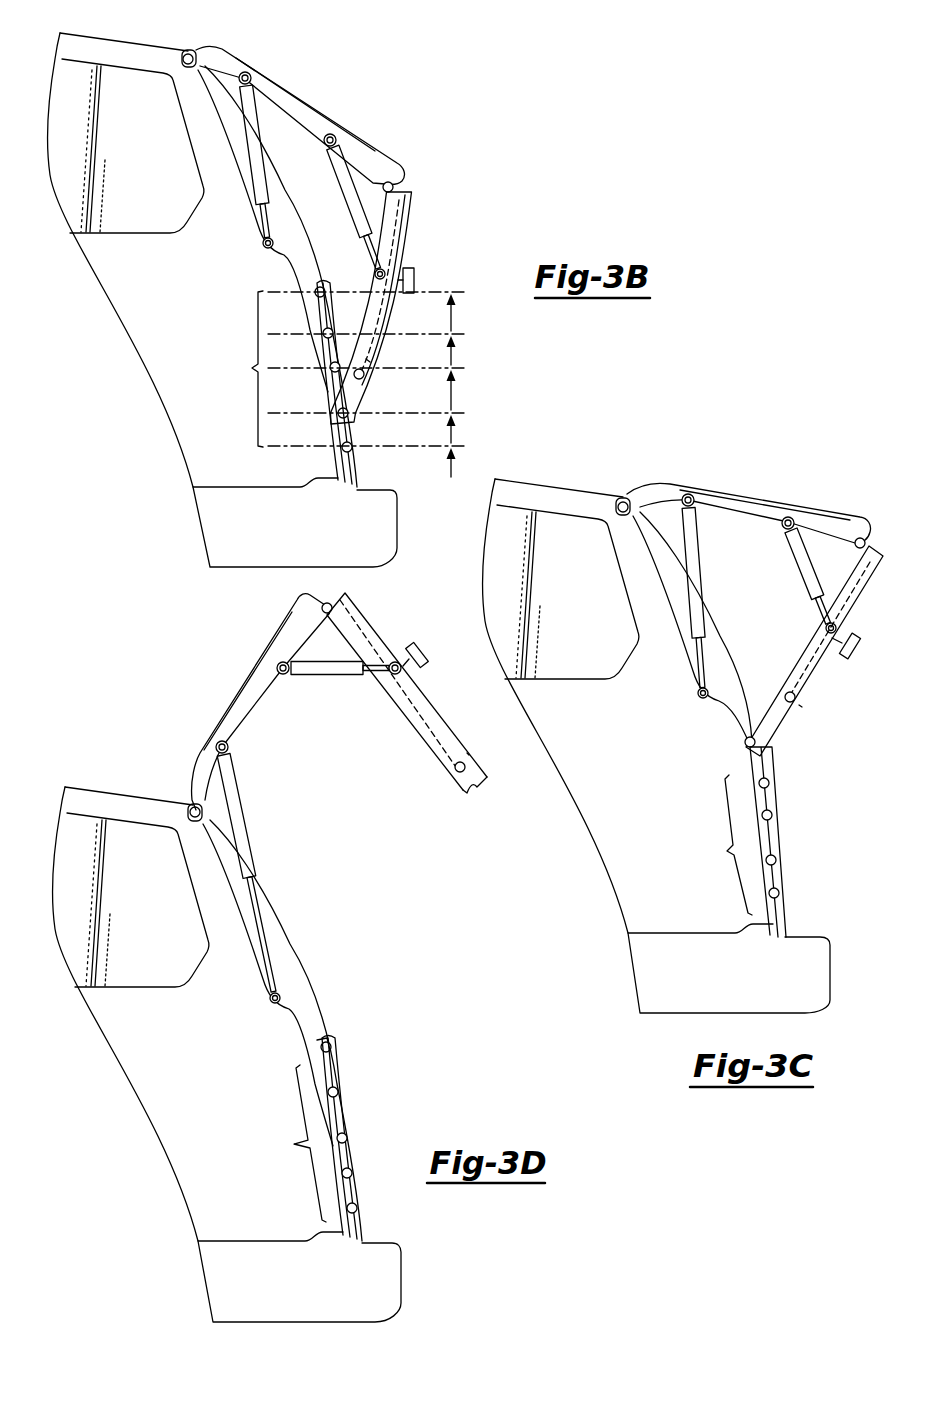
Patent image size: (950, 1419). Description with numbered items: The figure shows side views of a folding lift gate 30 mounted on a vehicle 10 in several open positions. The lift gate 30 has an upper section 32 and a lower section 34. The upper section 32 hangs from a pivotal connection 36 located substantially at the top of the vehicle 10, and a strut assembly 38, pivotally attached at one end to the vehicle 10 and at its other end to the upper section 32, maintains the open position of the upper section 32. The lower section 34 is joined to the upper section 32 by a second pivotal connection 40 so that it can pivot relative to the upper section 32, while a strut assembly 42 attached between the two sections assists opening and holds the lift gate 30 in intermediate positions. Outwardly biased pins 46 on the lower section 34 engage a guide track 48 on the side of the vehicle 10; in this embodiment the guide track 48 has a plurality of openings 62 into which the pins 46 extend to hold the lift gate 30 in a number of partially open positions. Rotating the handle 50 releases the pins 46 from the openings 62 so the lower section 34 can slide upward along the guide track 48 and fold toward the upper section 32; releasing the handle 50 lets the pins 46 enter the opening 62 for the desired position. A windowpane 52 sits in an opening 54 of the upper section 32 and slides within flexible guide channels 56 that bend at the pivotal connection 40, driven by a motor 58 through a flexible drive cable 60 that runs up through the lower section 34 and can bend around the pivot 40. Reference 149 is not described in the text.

In FIG. 3B, the vehicle 10 is at (87, 47).
In FIG. 3C, the vehicle 10 is at (530, 490).
In FIG. 3D, the vehicle 10 is at (100, 800).
In FIG. 3B, the lift gate 30 is at (324, 82).
In FIG. 3C, the lift gate 30 is at (744, 430).
In FIG. 3D, the lift gate 30 is at (434, 648).
In FIG. 3C, the upper section 32 is at (660, 485).
In FIG. 3D, the upper section 32 is at (242, 713).
In FIG. 3B, the lower section 34 is at (412, 213).
In FIG. 3C, the lower section 34 is at (845, 600).
In FIG. 3D, the lower section 34 is at (428, 727).
In FIG. 3B, the pivotal connection 36 is at (187, 45).
In FIG. 3C, the pivotal connection 36 is at (619, 494).
In FIG. 3D, the pivotal connection 36 is at (190, 803).
In FIG. 3B, the strut assembly 38 is at (257, 173).
In FIG. 3C, the strut assembly 38 is at (690, 557).
In FIG. 3D, the strut assembly 38 is at (235, 805).
In FIG. 3B, the pivotal connection 40 is at (402, 183).
In FIG. 3C, the pivotal connection 40 is at (865, 543).
In FIG. 3D, the pivotal connection 40 is at (319, 593).
In FIG. 3B, the strut assembly 42 is at (337, 177).
In FIG. 3C, the strut assembly 42 is at (830, 560).
In FIG. 3D, the strut assembly 42 is at (318, 672).
In FIG. 3B, the pins 46 is at (350, 420).
In FIG. 3C, the pins 46 is at (743, 742).
In FIG. 3D, the pins 46 is at (474, 806).
In FIG. 3B, the guide track 48 is at (355, 462).
In FIG. 3C, the guide track 48 is at (775, 820).
In FIG. 3D, the guide track 48 is at (340, 1127).
In FIG. 3B, the handle 50 is at (414, 285).
In FIG. 3C, the handle 50 is at (863, 643).
In FIG. 3D, the handle 50 is at (411, 646).
In FIG. 3B, the windowpane 52 is at (353, 125).
In FIG. 3C, the windowpane 52 is at (760, 495).
In FIG. 3D, the windowpane 52 is at (214, 744).
In FIG. 3B, the opening 54 is at (287, 78).
In FIG. 3D, the opening 54 is at (245, 663).
In FIG. 3B, the guide channels 56 is at (390, 165).
In FIG. 3C, the guide channels 56 is at (818, 663).
In FIG. 3D, the guide channels 56 is at (445, 718).
In FIG. 3B, the motor 58 is at (366, 377).
In FIG. 3C, the motor 58 is at (788, 718).
In FIG. 3D, the motor 58 is at (473, 773).
In FIG. 3B, the flexible drive cable 60 is at (370, 358).
In FIG. 3C, the flexible drive cable 60 is at (802, 707).
In FIG. 3D, the flexible drive cable 60 is at (468, 750).
In FIG. 3B, the openings 62 is at (341, 384).
In FIG. 3C, the openings 62 is at (727, 845).
In FIG. 3D, the openings 62 is at (297, 1143).
In FIG. 3B, the rail upper pivot 149 is at (326, 282).
In FIG. 3D, the rail upper pivot 149 is at (331, 1044).